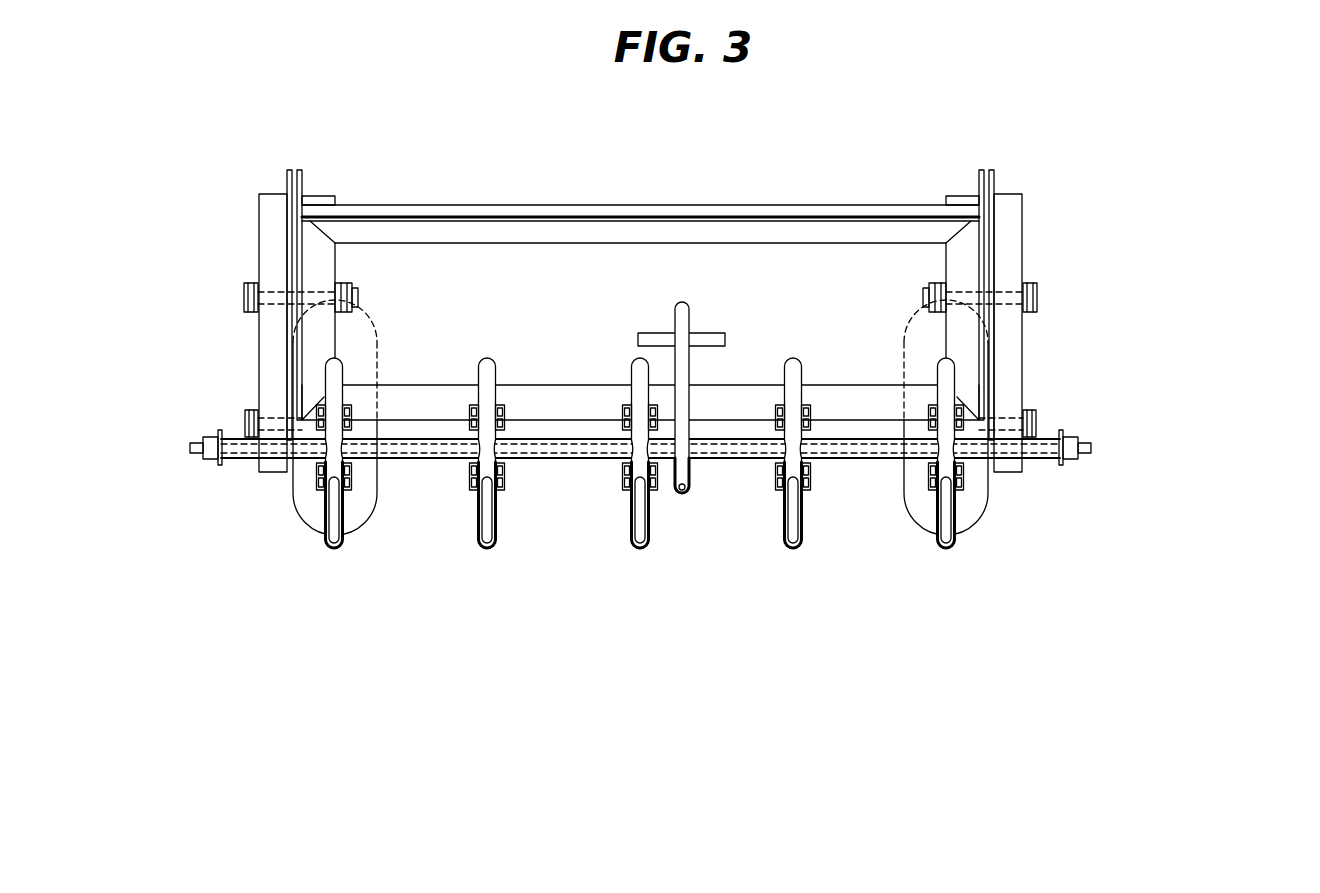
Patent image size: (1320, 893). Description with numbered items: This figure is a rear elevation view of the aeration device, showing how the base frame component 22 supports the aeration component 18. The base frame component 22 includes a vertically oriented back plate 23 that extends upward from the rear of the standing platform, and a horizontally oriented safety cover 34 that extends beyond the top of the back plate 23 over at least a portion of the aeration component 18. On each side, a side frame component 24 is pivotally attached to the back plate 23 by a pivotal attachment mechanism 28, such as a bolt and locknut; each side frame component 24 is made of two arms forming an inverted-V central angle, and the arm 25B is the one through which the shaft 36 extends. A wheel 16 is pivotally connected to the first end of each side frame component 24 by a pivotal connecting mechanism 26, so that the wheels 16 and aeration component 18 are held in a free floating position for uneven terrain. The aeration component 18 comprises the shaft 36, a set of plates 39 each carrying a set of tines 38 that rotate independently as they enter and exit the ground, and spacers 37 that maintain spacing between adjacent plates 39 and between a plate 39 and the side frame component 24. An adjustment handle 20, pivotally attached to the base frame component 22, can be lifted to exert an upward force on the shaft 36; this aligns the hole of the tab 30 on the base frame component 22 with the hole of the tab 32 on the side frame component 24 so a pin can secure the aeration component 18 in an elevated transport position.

The wheel 16 is at (297, 508).
The aeration component 18 is at (1214, 302).
The adjustment handle 20 is at (652, 320).
The base frame component 22 is at (825, 203).
The vertically oriented back plate 23 is at (762, 293).
The side frame component 24 is at (245, 247).
The arm 25B is at (270, 345).
The pivotal connecting mechanism 26 is at (243, 423).
The pivotal attachment mechanism 28 is at (358, 296).
The tab 30 is at (305, 182).
The tab 32 is at (288, 182).
The safety cover 34 is at (615, 205).
The shaft 36 is at (188, 447).
The spacer 37 is at (445, 438).
The tine 38 is at (502, 497).
The plate 39 is at (350, 497).